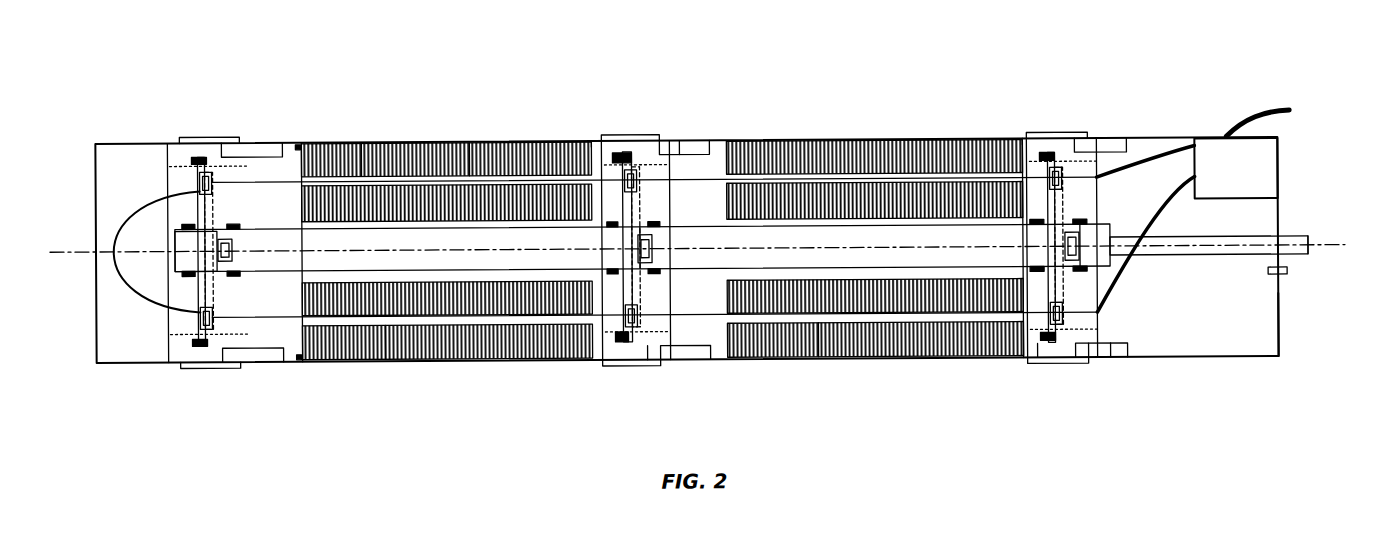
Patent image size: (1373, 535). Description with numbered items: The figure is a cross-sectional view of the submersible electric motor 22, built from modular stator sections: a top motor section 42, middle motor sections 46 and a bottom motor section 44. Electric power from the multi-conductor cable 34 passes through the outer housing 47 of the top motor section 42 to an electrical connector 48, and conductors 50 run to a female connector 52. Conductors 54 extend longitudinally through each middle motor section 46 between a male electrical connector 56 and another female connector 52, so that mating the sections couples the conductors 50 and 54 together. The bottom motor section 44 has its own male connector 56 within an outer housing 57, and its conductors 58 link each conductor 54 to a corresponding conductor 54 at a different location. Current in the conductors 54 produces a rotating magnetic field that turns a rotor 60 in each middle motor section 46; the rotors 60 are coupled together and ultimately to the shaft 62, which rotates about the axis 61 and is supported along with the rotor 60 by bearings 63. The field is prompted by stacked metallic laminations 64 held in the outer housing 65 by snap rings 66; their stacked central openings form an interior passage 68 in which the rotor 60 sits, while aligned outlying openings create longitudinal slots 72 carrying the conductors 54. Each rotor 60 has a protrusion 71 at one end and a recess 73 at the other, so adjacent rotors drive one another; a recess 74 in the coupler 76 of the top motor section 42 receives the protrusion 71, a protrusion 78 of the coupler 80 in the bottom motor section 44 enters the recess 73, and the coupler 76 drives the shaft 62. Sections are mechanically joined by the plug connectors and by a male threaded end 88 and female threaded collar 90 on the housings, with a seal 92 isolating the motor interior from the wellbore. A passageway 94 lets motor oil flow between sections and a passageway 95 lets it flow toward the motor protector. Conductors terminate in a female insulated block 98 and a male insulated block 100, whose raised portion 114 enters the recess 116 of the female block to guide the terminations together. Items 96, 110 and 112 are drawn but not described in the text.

The submersible electric motor 22 is at (393, 66).
The multi-conductor cable 34 is at (1275, 107).
The top motor section 42 is at (1178, 142).
The bottom motor section 44 is at (125, 140).
The middle motor section 46 is at (522, 143).
The outer housing 47 is at (1262, 347).
The electrical connector 48 is at (1259, 168).
The conductors 50 is at (1158, 228).
The female connector 52 is at (1098, 198).
The conductors 54 is at (681, 237).
The male electrical connector 56 is at (1000, 145).
The outer housing 57 is at (104, 252).
The conductors 58 is at (145, 303).
The rotor 60 is at (838, 111).
The axis 61 is at (1313, 256).
The shaft 62 is at (1228, 228).
The bearings 63 is at (665, 253).
The metallic laminations 64 is at (361, 255).
The outer housing 65 is at (599, 363).
The snap rings 66 is at (273, 129).
The interior passage 68 is at (561, 127).
The protrusion 71 is at (643, 292).
The longitudinal slots 72 is at (340, 141).
The recess 73 is at (653, 251).
The recess 74 is at (1133, 371).
The coupler 76 is at (1108, 270).
The protrusion 78 is at (220, 249).
The coupler 80 is at (187, 261).
The male threaded end 88 is at (804, 277).
The female threaded collar 90 is at (627, 374).
The seal 92 is at (616, 252).
The passageway 94 is at (633, 261).
The passageway 95 is at (1299, 290).
The spacer 96 is at (695, 131).
The female insulated block 98 is at (1106, 387).
The male insulated block 100 is at (1002, 353).
The hub 110 is at (170, 297).
The mounting plate 112 is at (419, 210).
The raised portion 114 is at (558, 314).
The recess 116 is at (862, 313).